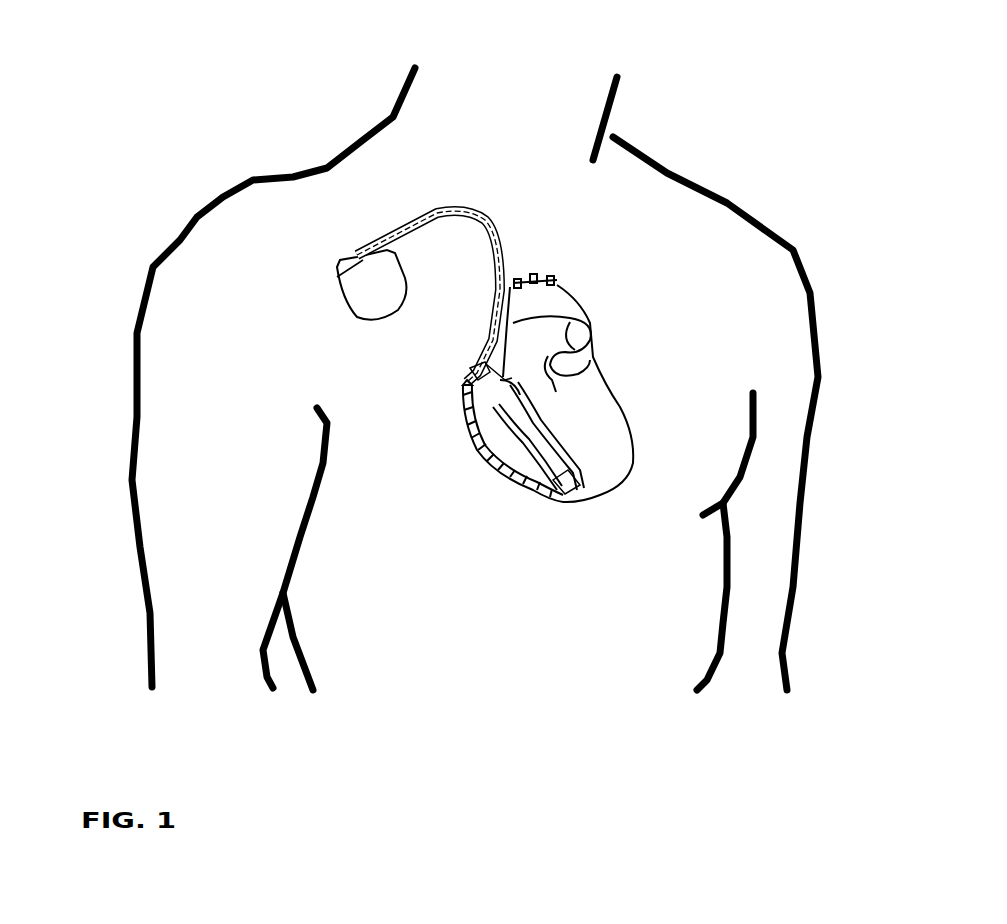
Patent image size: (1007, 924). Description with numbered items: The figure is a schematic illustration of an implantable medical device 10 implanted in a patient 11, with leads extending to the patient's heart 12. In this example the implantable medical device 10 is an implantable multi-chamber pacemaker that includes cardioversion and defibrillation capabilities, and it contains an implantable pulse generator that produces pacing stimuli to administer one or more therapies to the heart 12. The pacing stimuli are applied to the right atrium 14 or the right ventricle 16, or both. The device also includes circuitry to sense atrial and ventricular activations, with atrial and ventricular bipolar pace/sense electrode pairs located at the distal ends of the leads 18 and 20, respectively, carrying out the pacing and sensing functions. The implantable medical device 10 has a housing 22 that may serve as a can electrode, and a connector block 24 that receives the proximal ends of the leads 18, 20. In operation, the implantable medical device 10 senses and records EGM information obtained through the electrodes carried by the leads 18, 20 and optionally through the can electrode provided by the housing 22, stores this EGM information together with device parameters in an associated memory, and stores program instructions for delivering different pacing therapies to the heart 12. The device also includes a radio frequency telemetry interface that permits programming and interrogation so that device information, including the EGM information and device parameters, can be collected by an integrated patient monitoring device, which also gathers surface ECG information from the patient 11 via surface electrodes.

The implantable medical device 10 is at (395, 355).
The patient 11 is at (340, 148).
The heart 12 is at (630, 410).
The right atrium 14 is at (474, 393).
The right ventricle 16 is at (502, 452).
The atrial lead 18 is at (467, 370).
The ventricular lead 20 is at (543, 475).
The housing 22 is at (363, 297).
The connector block 24 is at (357, 253).